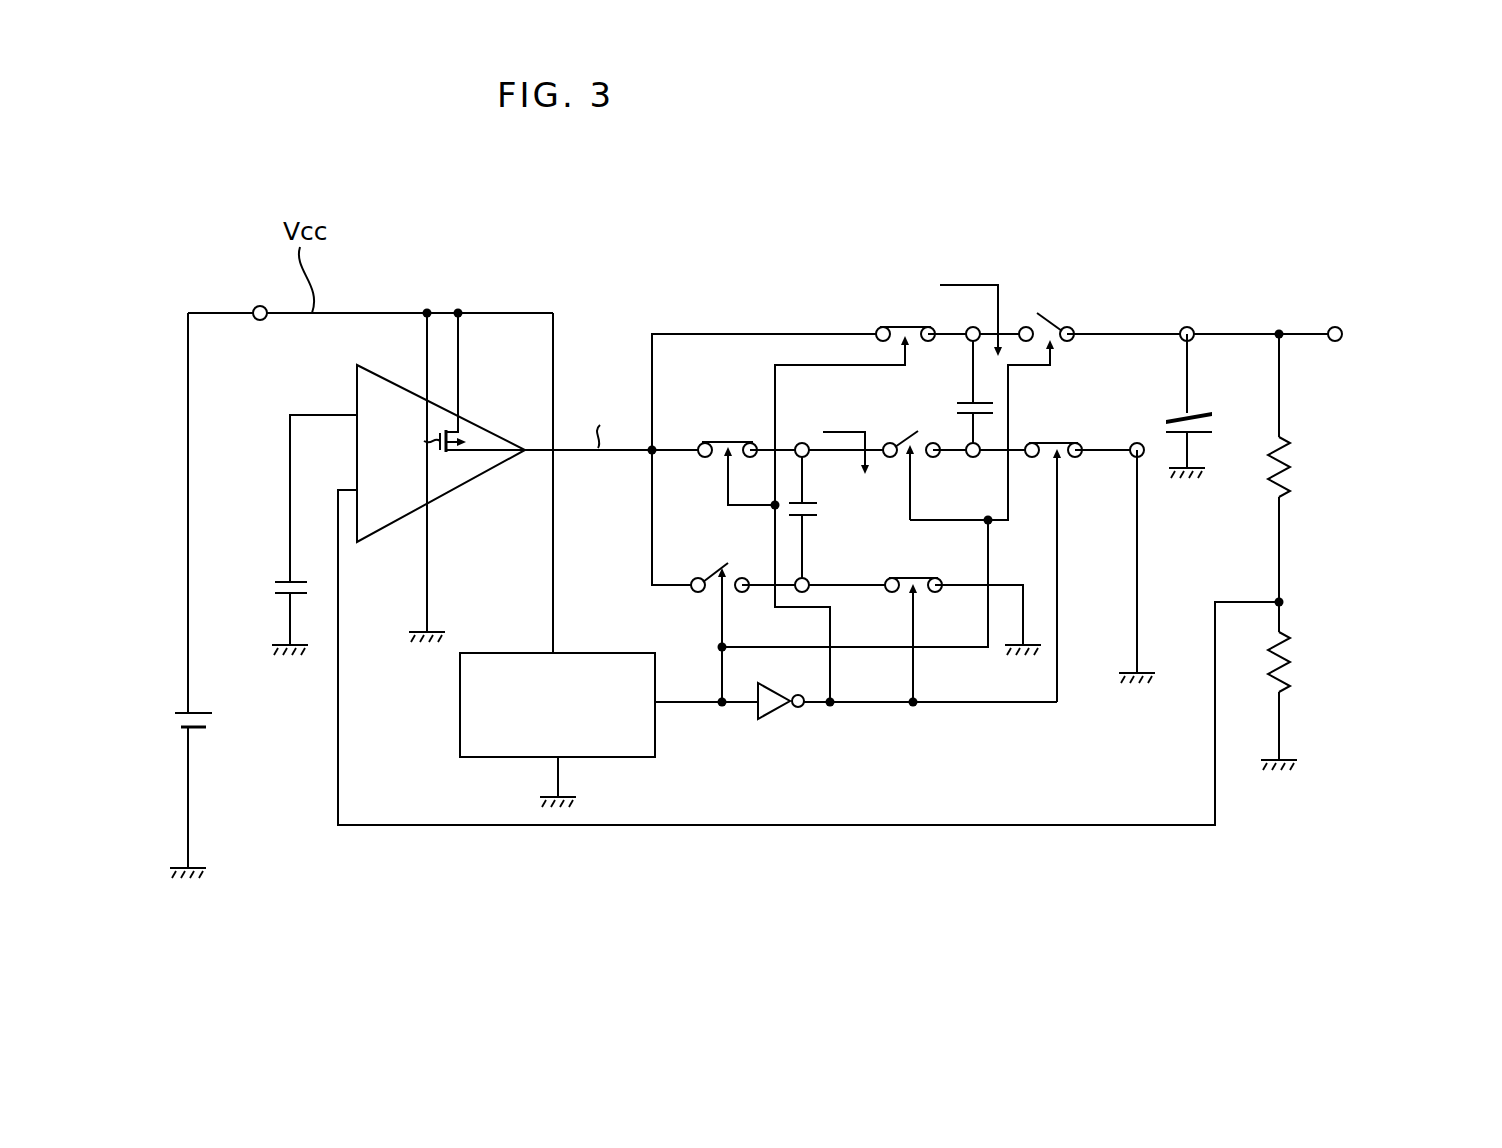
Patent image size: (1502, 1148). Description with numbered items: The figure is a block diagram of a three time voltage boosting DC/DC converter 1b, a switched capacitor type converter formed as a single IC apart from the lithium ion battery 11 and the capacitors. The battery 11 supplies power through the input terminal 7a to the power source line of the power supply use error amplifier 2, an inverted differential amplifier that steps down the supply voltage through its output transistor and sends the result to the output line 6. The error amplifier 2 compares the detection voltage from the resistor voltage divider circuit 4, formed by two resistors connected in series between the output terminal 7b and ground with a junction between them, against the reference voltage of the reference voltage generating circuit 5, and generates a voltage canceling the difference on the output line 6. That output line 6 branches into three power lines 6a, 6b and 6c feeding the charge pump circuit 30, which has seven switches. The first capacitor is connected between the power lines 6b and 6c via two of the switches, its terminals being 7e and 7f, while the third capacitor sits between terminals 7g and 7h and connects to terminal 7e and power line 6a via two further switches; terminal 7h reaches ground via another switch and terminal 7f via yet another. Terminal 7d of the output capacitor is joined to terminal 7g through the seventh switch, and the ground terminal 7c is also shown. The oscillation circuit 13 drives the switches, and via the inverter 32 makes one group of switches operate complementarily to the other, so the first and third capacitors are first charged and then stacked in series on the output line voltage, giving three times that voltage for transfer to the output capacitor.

The DC/DC converter 1b is at (872, 208).
The power supply use error amplifier 2 is at (378, 368).
The resistor voltage divider circuit 4 is at (1364, 529).
The reference voltage generating circuit 5 is at (278, 580).
The output line 6 is at (532, 455).
The power line 6a is at (677, 334).
The power line 6b is at (670, 448).
The power line 6c is at (670, 583).
The input terminal 7a is at (256, 306).
The output terminal 7b is at (1333, 324).
The ground terminal 7c is at (1137, 442).
The terminal 7d is at (1187, 324).
The terminal 7e is at (798, 440).
The terminal 7f is at (810, 590).
The terminal 7g is at (967, 317).
The terminal 7h is at (973, 458).
The lithium ion battery 11 is at (186, 712).
The oscillation circuit 13 is at (517, 652).
The three time voltage boosting charge pump circuit 30 is at (1005, 217).
The inverter 32 is at (767, 718).